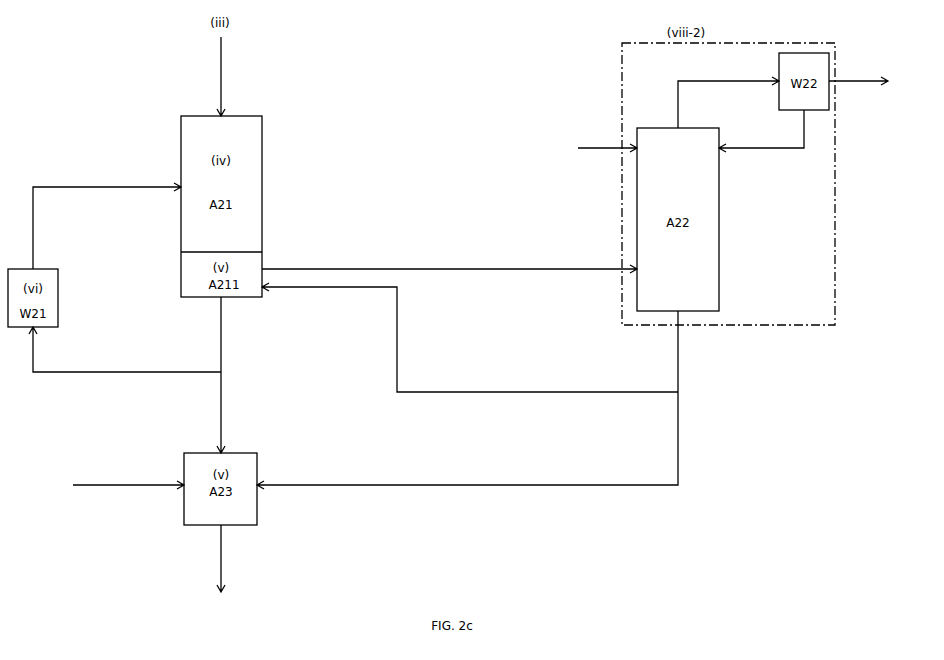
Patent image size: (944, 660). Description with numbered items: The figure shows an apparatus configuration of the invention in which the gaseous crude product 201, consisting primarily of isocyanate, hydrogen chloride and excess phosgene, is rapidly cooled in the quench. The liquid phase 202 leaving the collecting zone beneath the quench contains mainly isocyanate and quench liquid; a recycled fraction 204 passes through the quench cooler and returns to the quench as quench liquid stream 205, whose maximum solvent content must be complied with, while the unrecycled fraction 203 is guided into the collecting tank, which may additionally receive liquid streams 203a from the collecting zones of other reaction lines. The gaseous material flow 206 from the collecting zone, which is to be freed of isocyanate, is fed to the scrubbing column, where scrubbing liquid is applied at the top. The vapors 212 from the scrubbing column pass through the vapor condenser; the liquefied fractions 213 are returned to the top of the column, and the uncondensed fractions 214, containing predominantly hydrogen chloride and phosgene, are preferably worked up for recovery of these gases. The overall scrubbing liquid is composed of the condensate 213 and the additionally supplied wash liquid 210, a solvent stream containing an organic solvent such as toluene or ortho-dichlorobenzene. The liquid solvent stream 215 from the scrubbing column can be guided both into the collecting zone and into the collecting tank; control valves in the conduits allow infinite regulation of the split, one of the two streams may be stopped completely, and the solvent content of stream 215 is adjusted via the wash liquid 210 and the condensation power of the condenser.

The gaseous crude product 201 is at (236, 76).
The quench liquid stream 205 is at (107, 218).
The liquid phase from the collecting zone 202 is at (238, 334).
The recycled fraction of the liquid phase 204 is at (125, 349).
The unrecycled fraction of the liquid phase 203 is at (236, 412).
The liquid streams from collecting zones of other reaction lines 203a is at (128, 479).
The gaseous material flow 206 is at (449, 262).
The additionally supplied wash liquid 210 is at (607, 140).
The vapors from the scrubbing column 212 is at (728, 95).
The condensate 213 is at (761, 131).
The uncondensed fractions 214 is at (858, 73).
The liquid solvent stream from the scrubbing column 215 is at (484, 386).